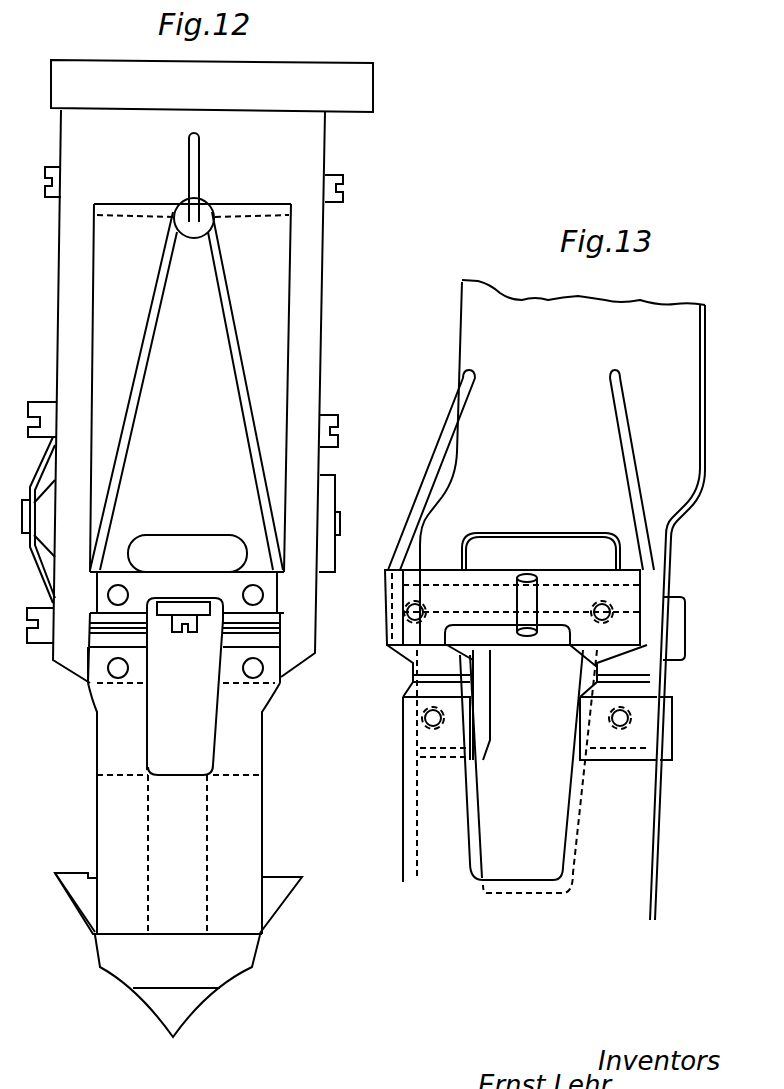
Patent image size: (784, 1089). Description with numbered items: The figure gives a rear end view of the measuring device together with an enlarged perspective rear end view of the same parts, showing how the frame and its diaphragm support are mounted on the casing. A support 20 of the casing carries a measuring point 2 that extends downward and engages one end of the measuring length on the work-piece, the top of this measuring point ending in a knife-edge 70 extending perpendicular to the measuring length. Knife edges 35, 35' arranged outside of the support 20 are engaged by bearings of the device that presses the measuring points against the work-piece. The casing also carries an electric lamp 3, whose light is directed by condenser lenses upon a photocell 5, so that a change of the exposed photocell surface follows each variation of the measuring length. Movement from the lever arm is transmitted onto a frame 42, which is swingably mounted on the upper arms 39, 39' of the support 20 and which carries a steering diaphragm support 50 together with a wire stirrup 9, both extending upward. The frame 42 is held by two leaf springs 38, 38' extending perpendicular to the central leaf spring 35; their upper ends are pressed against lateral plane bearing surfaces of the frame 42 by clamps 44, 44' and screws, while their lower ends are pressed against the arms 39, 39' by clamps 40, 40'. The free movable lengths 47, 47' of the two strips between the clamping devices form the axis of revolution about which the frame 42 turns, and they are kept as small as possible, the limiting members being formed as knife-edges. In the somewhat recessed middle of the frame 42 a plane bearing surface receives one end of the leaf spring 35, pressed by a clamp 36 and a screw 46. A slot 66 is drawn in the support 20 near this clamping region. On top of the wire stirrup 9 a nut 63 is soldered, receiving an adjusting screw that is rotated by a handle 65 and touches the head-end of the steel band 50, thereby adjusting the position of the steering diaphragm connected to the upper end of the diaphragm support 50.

In FIG. 12, the photocell 5 is at (327, 77).
In FIG. 12, the handle 65 is at (199, 165).
In FIG. 12, the nut 63 is at (194, 240).
In FIG. 12, the wire stirrup 9 is at (230, 310).
In FIG. 13, the wire stirrup 9 is at (442, 453).
In FIG. 12, the diaphragm support 50 is at (268, 347).
In FIG. 13, the diaphragm support 50 is at (561, 600).
In FIG. 12, the slot 66 is at (170, 543).
In FIG. 12, the frame 42 is at (180, 587).
In FIG. 12, the leaf spring 35 is at (187, 742).
In FIG. 12, the clamp 36 is at (164, 612).
In FIG. 12, the screw 46 is at (193, 620).
In FIG. 12, the electric lamp 3 is at (45, 530).
In FIG. 12, the free movable length 47' is at (87, 658).
In FIG. 13, the free movable length 47' is at (420, 671).
In FIG. 12, the free movable length 47 is at (274, 654).
In FIG. 13, the free movable length 47 is at (603, 671).
In FIG. 12, the arm of the support 39' is at (182, 808).
In FIG. 13, the arm of the support 39' is at (396, 780).
In FIG. 13, the arm of the support 39 is at (531, 771).
In FIG. 12, the support 20 is at (185, 766).
In FIG. 13, the support 20 is at (523, 912).
In FIG. 12, the knife edge 35' is at (65, 902).
In FIG. 12, the measuring point 2 is at (192, 1002).
In FIG. 12, the knife-edge 70 is at (177, 1040).
In FIG. 13, the clamp 44' is at (502, 705).
In FIG. 13, the clamp 44 is at (686, 647).
In FIG. 13, the leaf spring 38' is at (468, 789).
In FIG. 13, the clamp 40' is at (510, 751).
In FIG. 13, the leaf spring 38 is at (645, 728).
In FIG. 13, the clamp 40 is at (683, 734).